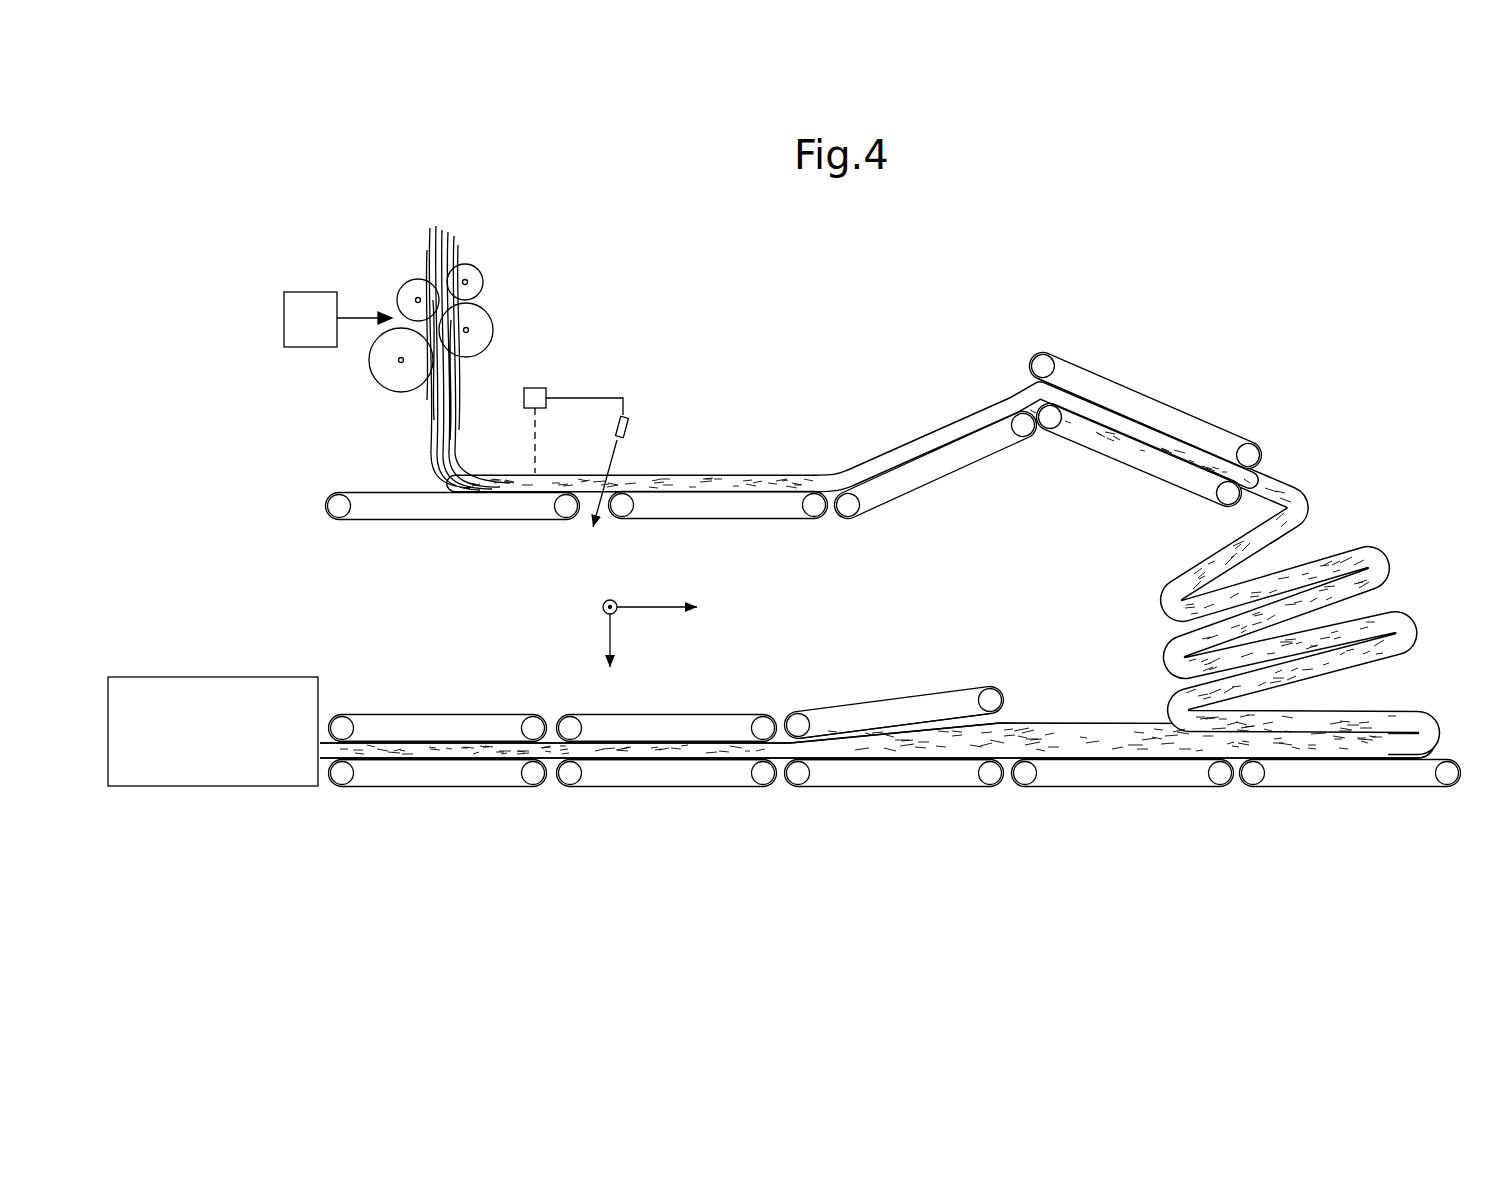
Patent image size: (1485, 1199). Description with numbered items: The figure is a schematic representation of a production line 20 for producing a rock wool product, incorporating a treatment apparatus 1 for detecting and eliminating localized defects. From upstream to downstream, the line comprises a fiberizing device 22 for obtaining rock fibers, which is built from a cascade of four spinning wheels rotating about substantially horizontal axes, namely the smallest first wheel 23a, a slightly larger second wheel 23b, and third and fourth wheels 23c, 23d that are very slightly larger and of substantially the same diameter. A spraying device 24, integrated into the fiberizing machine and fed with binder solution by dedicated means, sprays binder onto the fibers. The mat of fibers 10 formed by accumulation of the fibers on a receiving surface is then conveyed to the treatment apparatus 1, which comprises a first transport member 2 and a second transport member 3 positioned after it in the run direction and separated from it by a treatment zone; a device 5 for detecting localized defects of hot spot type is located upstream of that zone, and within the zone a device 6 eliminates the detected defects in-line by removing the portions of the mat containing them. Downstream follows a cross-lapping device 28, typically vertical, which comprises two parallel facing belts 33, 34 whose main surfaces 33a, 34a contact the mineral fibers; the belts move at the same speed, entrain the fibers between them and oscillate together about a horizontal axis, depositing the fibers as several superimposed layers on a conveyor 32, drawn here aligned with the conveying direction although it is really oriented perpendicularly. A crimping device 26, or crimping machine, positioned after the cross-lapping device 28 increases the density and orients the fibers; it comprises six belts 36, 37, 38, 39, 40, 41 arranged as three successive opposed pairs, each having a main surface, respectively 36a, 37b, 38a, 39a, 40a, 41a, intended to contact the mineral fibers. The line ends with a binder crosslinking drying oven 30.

The treatment apparatus 1 is at (600, 398).
The first transport member 2 is at (433, 528).
The second transport member 3 is at (751, 523).
The device for detecting localized defects 5 is at (524, 398).
The device for eliminating defects 6 is at (628, 430).
The mat of fibers 10 is at (753, 470).
The production line 20 is at (1250, 215).
The fiberizing device 22 is at (530, 272).
The first spinning wheel 23a is at (480, 268).
The second spinning wheel 23b is at (405, 282).
The third spinning wheel 23c is at (492, 314).
The fourth spinning wheel 23d is at (386, 400).
The spraying device 24 is at (322, 332).
The crimping device 26 is at (598, 860).
The cross-lapping device 28 is at (1256, 363).
The binder crosslinking drying oven 30 is at (227, 677).
The conveyor 32 is at (1350, 792).
The belt of cross-lapping device 33 is at (1094, 462).
The main surface of belt 33 33a is at (1127, 440).
The belt of cross-lapping device 34 is at (1147, 386).
The main surface of belt 34 34a is at (1176, 462).
The belt of crimping machine 36 is at (885, 792).
The main surface of belt 36 36a is at (917, 742).
The belt of crimping machine 37 is at (944, 682).
The belt surface of conveyor 37 37b is at (1000, 737).
The belt of crimping machine 38 is at (635, 792).
The main surface of belt 38 38a is at (663, 752).
The belt of crimping machine 39 is at (680, 705).
The main surface of belt 39 39a is at (710, 753).
The belt of crimping machine 40 is at (403, 791).
The main surface of belt 40 40a is at (437, 755).
The belt of crimping machine 41 is at (447, 710).
The main surface of belt 41 41a is at (487, 753).